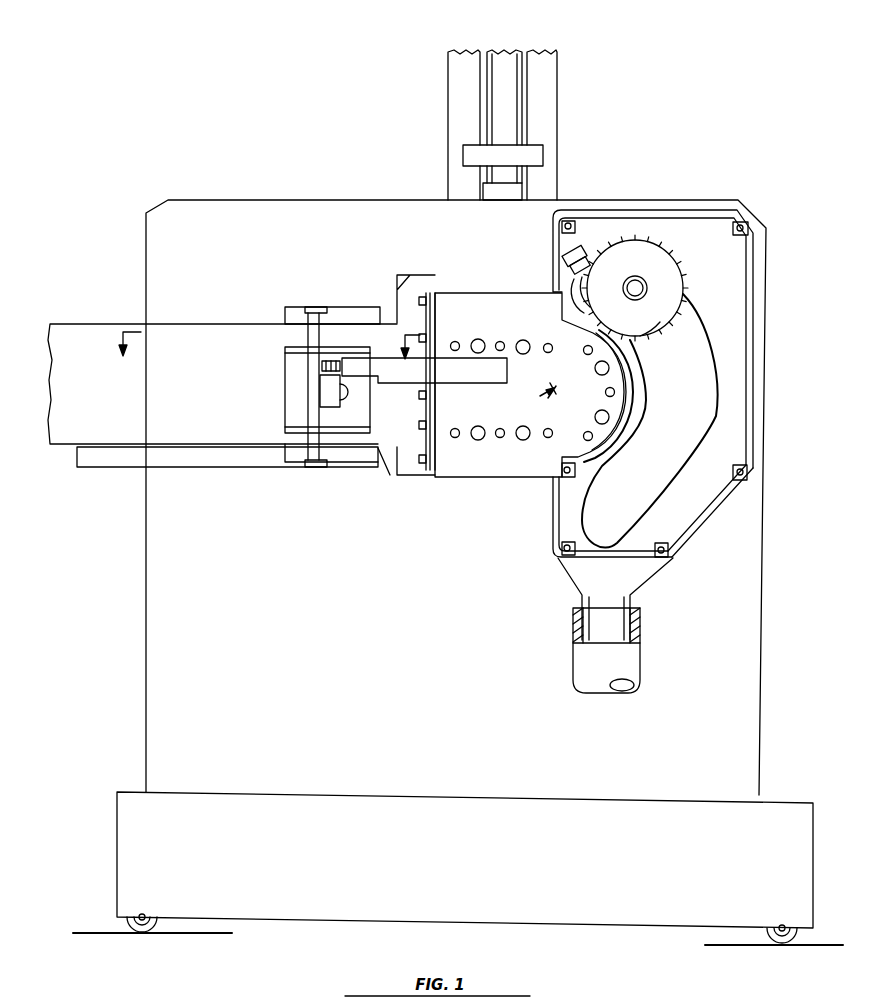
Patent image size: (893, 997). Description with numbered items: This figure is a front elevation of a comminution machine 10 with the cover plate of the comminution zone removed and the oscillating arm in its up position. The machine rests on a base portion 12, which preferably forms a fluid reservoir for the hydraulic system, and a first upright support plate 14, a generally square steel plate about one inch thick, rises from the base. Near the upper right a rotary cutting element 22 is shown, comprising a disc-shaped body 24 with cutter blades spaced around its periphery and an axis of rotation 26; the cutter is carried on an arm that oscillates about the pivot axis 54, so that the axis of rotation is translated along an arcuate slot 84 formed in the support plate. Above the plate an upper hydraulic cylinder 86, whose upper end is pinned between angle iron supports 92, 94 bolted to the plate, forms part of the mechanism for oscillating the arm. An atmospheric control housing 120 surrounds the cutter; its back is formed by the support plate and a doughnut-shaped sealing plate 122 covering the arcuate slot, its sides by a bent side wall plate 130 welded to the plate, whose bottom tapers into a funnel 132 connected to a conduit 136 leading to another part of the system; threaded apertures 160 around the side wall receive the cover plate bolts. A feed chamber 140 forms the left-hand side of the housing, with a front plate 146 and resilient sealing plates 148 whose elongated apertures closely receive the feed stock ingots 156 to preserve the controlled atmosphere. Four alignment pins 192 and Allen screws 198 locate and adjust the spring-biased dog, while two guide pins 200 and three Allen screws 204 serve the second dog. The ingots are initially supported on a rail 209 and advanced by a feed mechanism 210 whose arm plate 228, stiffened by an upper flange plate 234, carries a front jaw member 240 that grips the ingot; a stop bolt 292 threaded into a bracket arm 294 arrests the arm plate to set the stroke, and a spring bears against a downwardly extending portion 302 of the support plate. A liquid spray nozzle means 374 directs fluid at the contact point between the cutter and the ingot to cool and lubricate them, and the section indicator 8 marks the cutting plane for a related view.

The comminution machine 10 is at (126, 198).
The base portion 12 is at (128, 855).
The first upright support plate 14 is at (296, 212).
The rotary cutting element 22 is at (690, 271).
The disc-shaped body 24 is at (666, 333).
The axis of rotation 26 is at (637, 290).
The pivot axis 54 is at (535, 395).
The arcuate slot 84 is at (691, 491).
The upper hydraulic cylinder 86 is at (496, 62).
The angle iron support 92 is at (452, 111).
The angle iron support 94 is at (549, 104).
The atmospheric control housing 120 is at (548, 541).
The doughnut-shaped sealing plate 122 is at (415, 288).
The side wall plate 130 is at (705, 521).
The funnel 132 is at (578, 589).
The conduit 136 is at (582, 661).
The feed chamber 140 is at (478, 496).
The front plate 146 is at (514, 472).
The resilient sealing plates 148 is at (436, 306).
The feed stock ingots 156 is at (634, 375).
The threaded apertures 160 is at (751, 226).
The alignment pins 192 is at (480, 339).
The Allen screws 198 is at (455, 341).
The guide pins 200 is at (634, 404).
The Allen screws 204 is at (605, 393).
The rail 209 is at (140, 460).
The feed mechanism 210 is at (318, 482).
The arm plate 228 is at (300, 333).
The upper stiffening flange plate 234 is at (315, 306).
The front jaw member 240 is at (292, 397).
The bolt 292 is at (331, 361).
The bracket arm 294 is at (421, 373).
The downwardly extending portion 302 is at (376, 310).
The liquid spray nozzle means 374 is at (590, 291).
The section line 8 is at (269, 358).